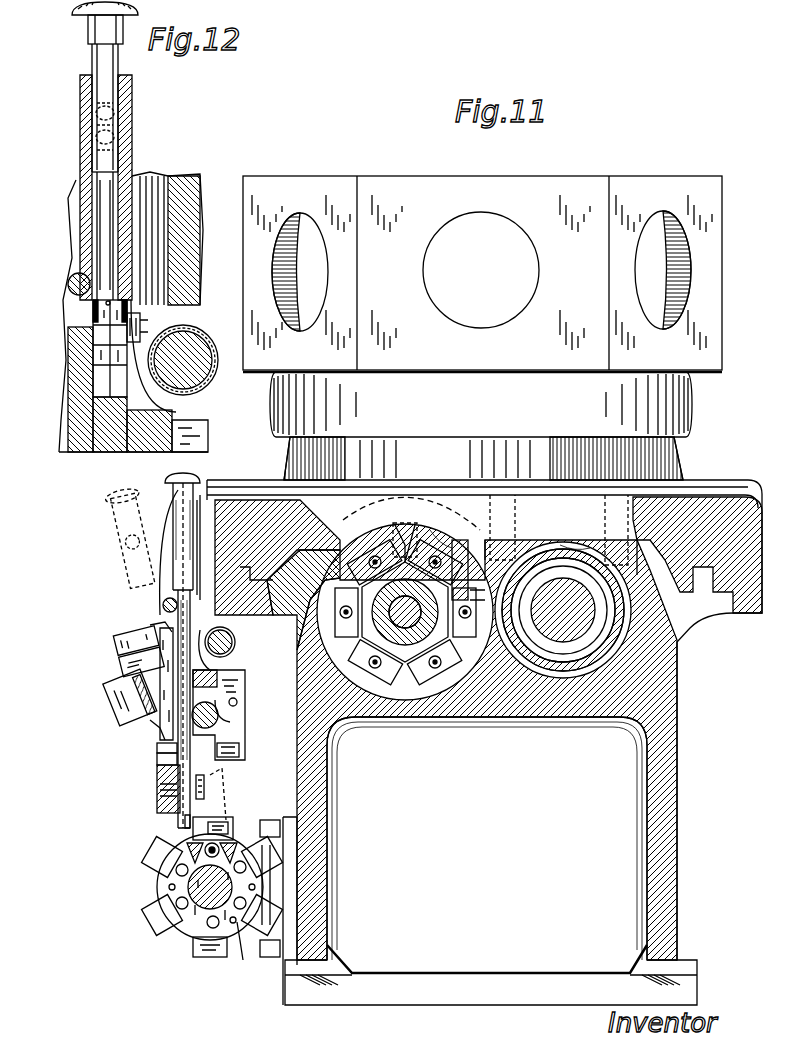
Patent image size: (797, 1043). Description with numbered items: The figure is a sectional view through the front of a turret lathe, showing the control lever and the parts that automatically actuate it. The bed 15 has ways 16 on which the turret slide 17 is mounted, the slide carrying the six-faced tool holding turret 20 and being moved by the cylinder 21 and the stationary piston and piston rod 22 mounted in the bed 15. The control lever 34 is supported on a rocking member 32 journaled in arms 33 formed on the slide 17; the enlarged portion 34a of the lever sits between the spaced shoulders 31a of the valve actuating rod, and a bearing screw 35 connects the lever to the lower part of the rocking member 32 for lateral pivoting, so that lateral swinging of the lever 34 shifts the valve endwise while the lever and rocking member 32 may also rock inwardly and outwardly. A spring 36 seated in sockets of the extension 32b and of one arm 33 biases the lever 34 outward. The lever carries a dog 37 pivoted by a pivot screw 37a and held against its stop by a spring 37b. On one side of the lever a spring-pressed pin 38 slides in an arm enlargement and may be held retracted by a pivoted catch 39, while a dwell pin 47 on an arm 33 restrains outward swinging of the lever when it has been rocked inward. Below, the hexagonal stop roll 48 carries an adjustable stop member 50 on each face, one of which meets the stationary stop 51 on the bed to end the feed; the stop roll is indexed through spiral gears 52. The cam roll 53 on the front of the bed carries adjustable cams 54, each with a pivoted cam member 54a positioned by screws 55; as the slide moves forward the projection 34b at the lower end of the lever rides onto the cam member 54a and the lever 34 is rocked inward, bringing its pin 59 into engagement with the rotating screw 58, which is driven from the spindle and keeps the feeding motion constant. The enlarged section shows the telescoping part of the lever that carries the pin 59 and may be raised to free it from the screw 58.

In FIG. 11, the bed 15 is at (668, 706).
In FIG. 11, the ways 16 is at (688, 608).
In FIG. 11, the turret slide 17 is at (727, 497).
In FIG. 11, the tool holding turret 20 is at (706, 220).
In FIG. 11, the cylinder 21 is at (577, 645).
In FIG. 11, the piston and piston rod 22 is at (548, 640).
In FIG. 11, the spaced shoulders 31a is at (236, 748).
In FIG. 12, the rocking member 32 is at (175, 418).
In FIG. 11, the rocking member 32 is at (157, 783).
In FIG. 11, the extension 32b is at (140, 718).
In FIG. 12, the arms 33 is at (72, 206).
In FIG. 11, the arms 33 is at (160, 574).
In FIG. 12, the control lever 34 is at (132, 97).
In FIG. 11, the control lever 34 is at (176, 500).
In FIG. 11, the enlarged portion 34a is at (244, 704).
In FIG. 11, the projection 34b is at (184, 822).
In FIG. 11, the bearing screw 35 is at (205, 782).
In FIG. 11, the spring 36 is at (120, 690).
In FIG. 12, the dog 37 is at (80, 400).
In FIG. 11, the dog 37 is at (168, 640).
In FIG. 11, the pivot screw 37a is at (158, 745).
In FIG. 11, the spring 37b is at (160, 758).
In FIG. 12, the spring-pressed pin 38 is at (72, 335).
In FIG. 11, the spring-pressed pin 38 is at (160, 632).
In FIG. 11, the pivoted catch 39 is at (118, 657).
In FIG. 12, the dwell pin 47 is at (70, 280).
In FIG. 11, the dwell pin 47 is at (163, 606).
In FIG. 11, the stop roll 48 is at (402, 685).
In FIG. 11, the stop member 50 is at (372, 690).
In FIG. 11, the stationary stop 51 is at (468, 690).
In FIG. 11, the spiral gears 52 is at (411, 527).
In FIG. 11, the cam roll 53 is at (200, 920).
In FIG. 11, the adjustable cams 54 is at (150, 872).
In FIG. 11, the pivoted cam member 54a is at (225, 817).
In FIG. 11, the screws 55 is at (228, 848).
In FIG. 12, the rotating screw 58 is at (195, 345).
In FIG. 11, the rotating screw 58 is at (236, 640).
In FIG. 12, the pin 59 is at (137, 310).